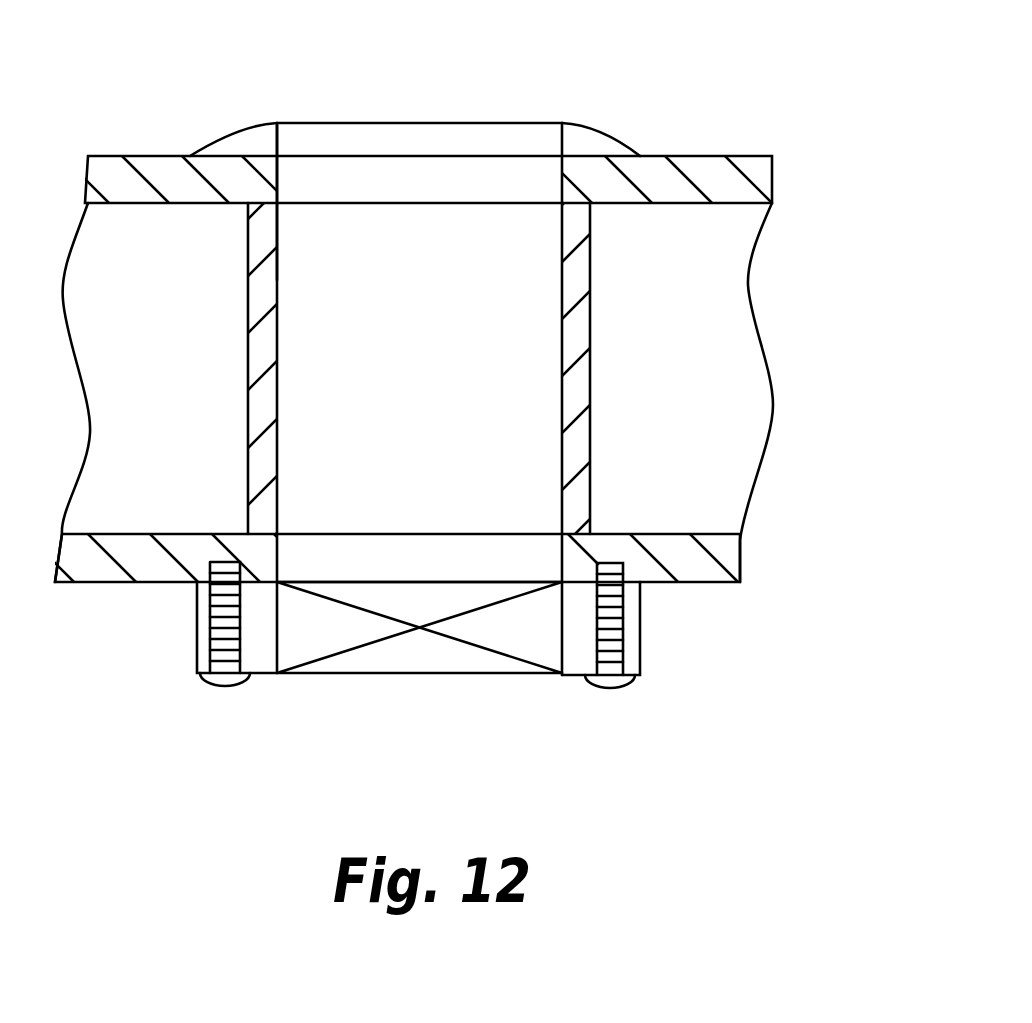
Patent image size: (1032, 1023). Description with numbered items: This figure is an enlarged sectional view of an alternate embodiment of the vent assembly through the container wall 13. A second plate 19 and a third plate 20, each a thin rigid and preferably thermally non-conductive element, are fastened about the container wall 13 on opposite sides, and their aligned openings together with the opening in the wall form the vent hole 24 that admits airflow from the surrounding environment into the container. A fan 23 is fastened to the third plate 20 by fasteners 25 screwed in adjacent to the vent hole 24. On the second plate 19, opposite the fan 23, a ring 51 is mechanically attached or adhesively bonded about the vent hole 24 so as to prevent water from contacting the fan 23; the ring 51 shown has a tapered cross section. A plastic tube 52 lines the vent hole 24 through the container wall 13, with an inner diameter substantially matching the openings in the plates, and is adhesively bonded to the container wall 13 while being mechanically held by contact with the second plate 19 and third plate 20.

The container wall 13 is at (748, 378).
The second plate 19 is at (760, 182).
The third plate 20 is at (727, 555).
The fan 23 is at (422, 673).
The vent hole 24 is at (398, 373).
The fasteners 25 is at (223, 687).
The ring 51 is at (588, 142).
The tube 52 is at (277, 277).